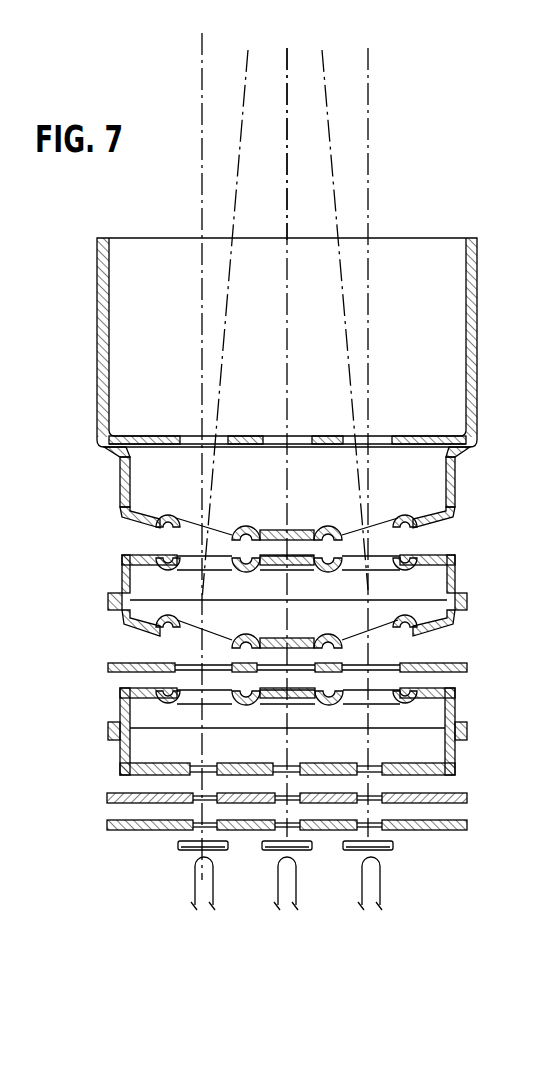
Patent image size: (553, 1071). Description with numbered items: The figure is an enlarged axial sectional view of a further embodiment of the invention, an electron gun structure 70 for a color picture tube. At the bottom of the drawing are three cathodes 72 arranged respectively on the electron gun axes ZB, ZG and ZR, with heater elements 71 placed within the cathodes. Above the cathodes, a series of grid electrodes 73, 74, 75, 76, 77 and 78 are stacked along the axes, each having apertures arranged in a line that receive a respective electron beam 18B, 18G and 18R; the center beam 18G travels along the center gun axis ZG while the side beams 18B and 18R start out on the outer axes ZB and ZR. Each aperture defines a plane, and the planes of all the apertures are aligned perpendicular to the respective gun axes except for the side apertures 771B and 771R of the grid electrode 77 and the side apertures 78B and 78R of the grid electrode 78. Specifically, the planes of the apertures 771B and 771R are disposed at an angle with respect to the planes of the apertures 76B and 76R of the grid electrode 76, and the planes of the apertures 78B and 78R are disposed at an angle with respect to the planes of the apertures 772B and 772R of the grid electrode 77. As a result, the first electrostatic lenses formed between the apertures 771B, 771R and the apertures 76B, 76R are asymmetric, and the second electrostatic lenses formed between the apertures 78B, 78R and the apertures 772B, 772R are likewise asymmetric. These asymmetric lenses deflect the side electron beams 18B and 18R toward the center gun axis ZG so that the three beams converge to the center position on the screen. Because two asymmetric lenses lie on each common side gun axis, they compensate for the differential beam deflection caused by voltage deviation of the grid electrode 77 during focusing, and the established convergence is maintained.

The electron gun structure 70 is at (405, 230).
The heater elements 71 is at (377, 893).
The cathodes 72 is at (393, 843).
The grid electrode 73 is at (467, 822).
The grid electrode 74 is at (467, 797).
The grid electrode 75 is at (460, 712).
The grid electrode 76 is at (286, 676).
The aperture of grid electrode 76 76B is at (187, 668).
The aperture of grid electrode 76 76R is at (383, 663).
The grid electrode 77 is at (291, 584).
The side aperture of grid electrode 77 771B is at (187, 633).
The side aperture of grid electrode 77 771R is at (383, 633).
The aperture of grid electrode 77 772B is at (187, 562).
The aperture of grid electrode 77 772R is at (383, 565).
The grid electrode 78 is at (313, 493).
The side aperture of grid electrode 78 78B is at (197, 518).
The side aperture of grid electrode 78 78R is at (381, 498).
The side electron beam 18B is at (248, 58).
The electron beam 18G is at (288, 58).
The side electron beam 18R is at (325, 62).
The electron gun axis ZB is at (202, 70).
The center electron gun axis ZG is at (287, 213).
The electron gun axis ZR is at (368, 110).